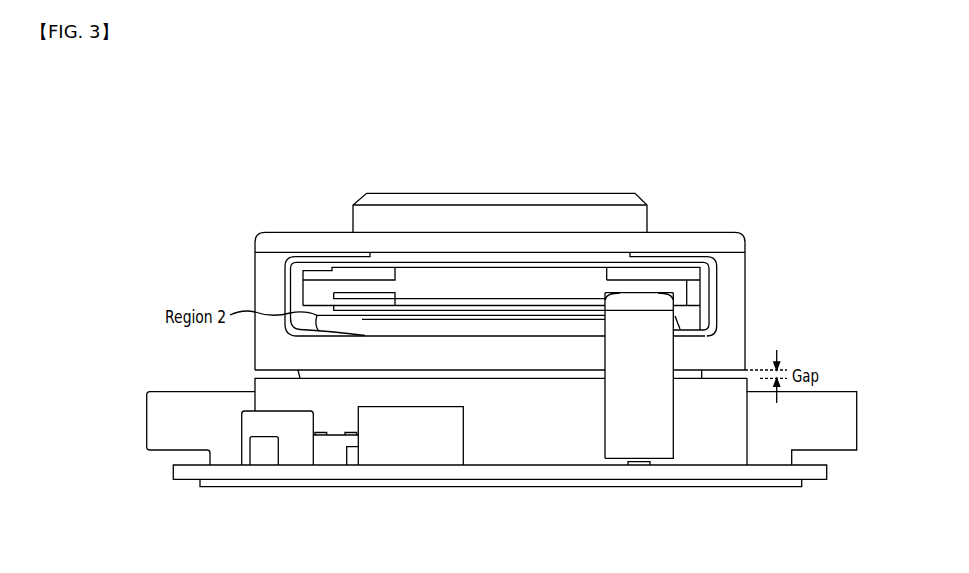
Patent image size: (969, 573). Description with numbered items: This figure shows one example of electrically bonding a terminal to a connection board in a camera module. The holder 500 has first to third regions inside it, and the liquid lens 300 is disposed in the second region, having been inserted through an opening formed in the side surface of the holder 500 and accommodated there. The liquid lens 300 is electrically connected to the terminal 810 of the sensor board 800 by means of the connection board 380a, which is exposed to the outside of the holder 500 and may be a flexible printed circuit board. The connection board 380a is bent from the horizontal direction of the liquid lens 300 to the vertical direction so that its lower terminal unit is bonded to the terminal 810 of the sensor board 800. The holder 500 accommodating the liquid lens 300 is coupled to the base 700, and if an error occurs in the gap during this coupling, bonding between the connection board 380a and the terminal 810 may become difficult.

The liquid lens 300 is at (317, 284).
The holder 500 is at (733, 233).
The base 700 is at (730, 426).
The sensor board 800 is at (813, 475).
The terminal 810 is at (641, 465).
The connection board 380a is at (666, 437).